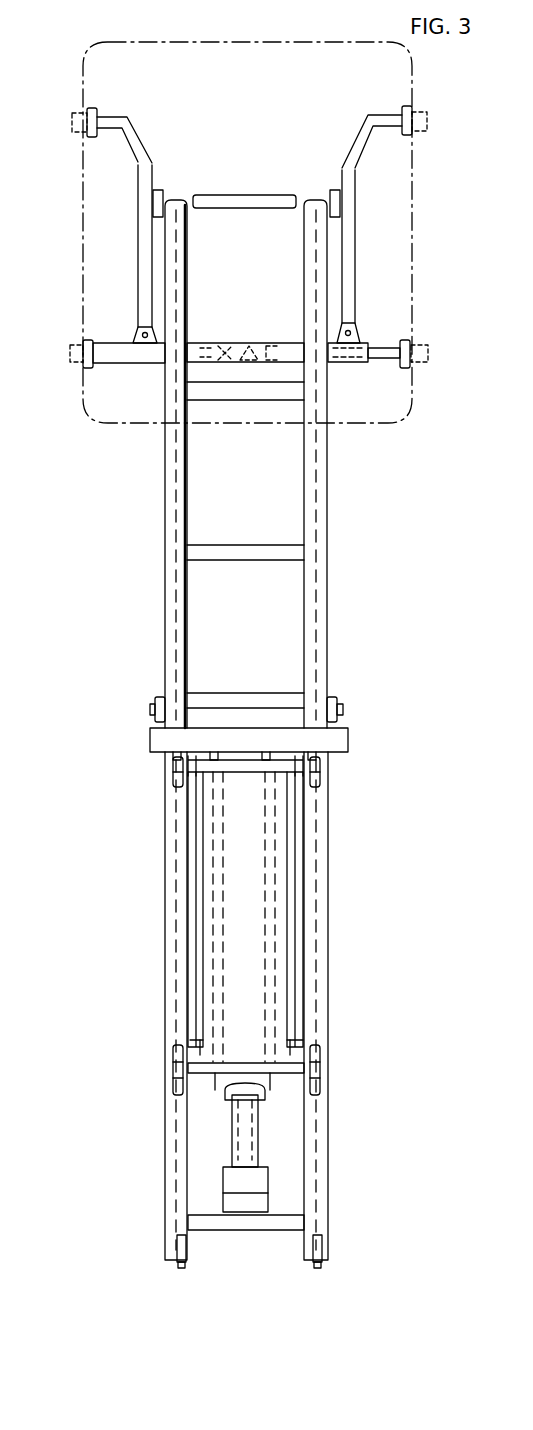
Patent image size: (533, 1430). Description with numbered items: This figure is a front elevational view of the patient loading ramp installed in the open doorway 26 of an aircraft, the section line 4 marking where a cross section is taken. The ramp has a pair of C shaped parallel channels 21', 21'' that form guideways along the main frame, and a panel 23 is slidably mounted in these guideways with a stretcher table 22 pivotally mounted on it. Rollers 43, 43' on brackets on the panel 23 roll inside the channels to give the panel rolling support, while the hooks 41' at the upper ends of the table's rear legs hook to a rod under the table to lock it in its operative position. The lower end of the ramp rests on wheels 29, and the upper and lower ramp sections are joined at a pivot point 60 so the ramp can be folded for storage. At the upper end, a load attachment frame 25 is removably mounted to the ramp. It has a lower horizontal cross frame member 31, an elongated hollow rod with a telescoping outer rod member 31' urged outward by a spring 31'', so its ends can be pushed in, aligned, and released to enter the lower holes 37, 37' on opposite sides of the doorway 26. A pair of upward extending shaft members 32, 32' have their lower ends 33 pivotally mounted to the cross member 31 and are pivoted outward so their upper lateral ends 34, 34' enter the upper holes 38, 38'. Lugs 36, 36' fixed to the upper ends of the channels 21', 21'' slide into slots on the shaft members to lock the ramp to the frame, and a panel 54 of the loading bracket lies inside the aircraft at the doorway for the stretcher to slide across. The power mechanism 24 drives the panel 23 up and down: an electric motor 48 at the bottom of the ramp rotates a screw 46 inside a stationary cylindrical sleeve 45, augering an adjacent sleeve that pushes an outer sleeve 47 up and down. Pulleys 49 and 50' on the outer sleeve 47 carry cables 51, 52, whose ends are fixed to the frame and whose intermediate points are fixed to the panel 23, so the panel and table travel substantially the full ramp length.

The section line 4 is at (282, 78).
The C shaped parallel channel 21' is at (146, 464).
The C shaped parallel channel 21'' is at (355, 464).
The stretcher table 22 is at (348, 727).
The panel 23 is at (302, 983).
The power mechanism 24 is at (226, 1158).
The load attachment frame 25 is at (357, 268).
The doorway 26 is at (413, 318).
The wheels 29 is at (177, 1262).
The lower horizontal cross frame member 31 is at (245, 331).
The telescoping outer rod member 31' is at (421, 392).
The spring 31'' is at (250, 422).
The upward extending shaft member 32 is at (101, 246).
The upward extending shaft member 32' is at (402, 246).
The lower ends 33 is at (355, 327).
The upper lateral end 34 is at (124, 158).
The upper lateral end 34' is at (407, 150).
The lug 36 is at (195, 212).
The lug 36' is at (380, 192).
The lower hole 37 is at (103, 381).
The lower hole 37' is at (411, 362).
The upper hole 38 is at (65, 107).
The upper hole 38' is at (446, 114).
The hooks 41' is at (253, 901).
The roller 43 is at (139, 915).
The roller 43' is at (364, 926).
The stationary cylindrical sleeve 45 is at (232, 1130).
The screw 46 is at (258, 1132).
The outer sleeve 47 is at (228, 1096).
The electric motor 48 is at (268, 1185).
The pulley 49 is at (172, 1042).
The pulley 50' is at (370, 691).
The cable 51 is at (165, 895).
The cable 52 is at (305, 893).
The panel of the loading bracket 54 is at (243, 195).
The pivot point 60 is at (150, 710).